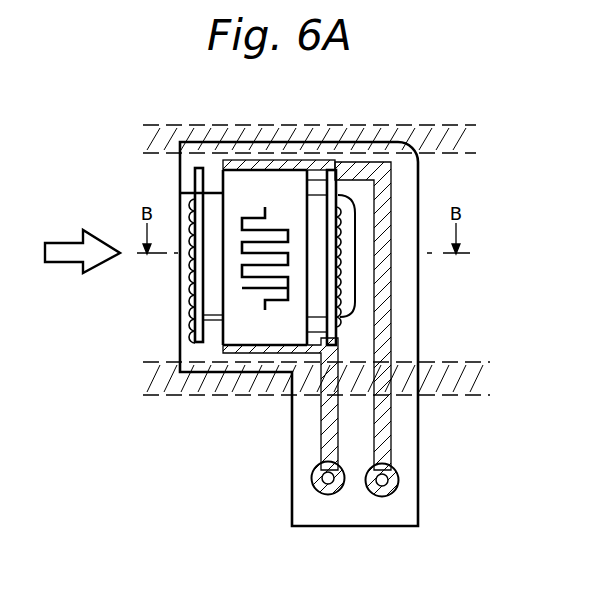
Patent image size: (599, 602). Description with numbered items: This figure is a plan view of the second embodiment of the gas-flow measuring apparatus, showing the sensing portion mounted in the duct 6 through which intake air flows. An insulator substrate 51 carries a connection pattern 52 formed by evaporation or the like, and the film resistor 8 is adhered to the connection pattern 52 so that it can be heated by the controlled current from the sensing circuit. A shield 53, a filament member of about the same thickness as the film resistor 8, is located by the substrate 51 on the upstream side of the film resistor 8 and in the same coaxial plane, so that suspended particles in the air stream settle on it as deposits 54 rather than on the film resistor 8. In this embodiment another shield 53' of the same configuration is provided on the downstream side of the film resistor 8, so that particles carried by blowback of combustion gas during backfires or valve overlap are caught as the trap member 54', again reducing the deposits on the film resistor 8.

The duct 6 is at (431, 130).
The film resistor 8 is at (262, 331).
The insulator substrate 51 is at (300, 440).
The connection pattern 52 is at (338, 437).
The shield 53 is at (167, 250).
The shield 53' is at (350, 212).
The deposits 54 is at (151, 271).
The trap member 54' is at (404, 261).